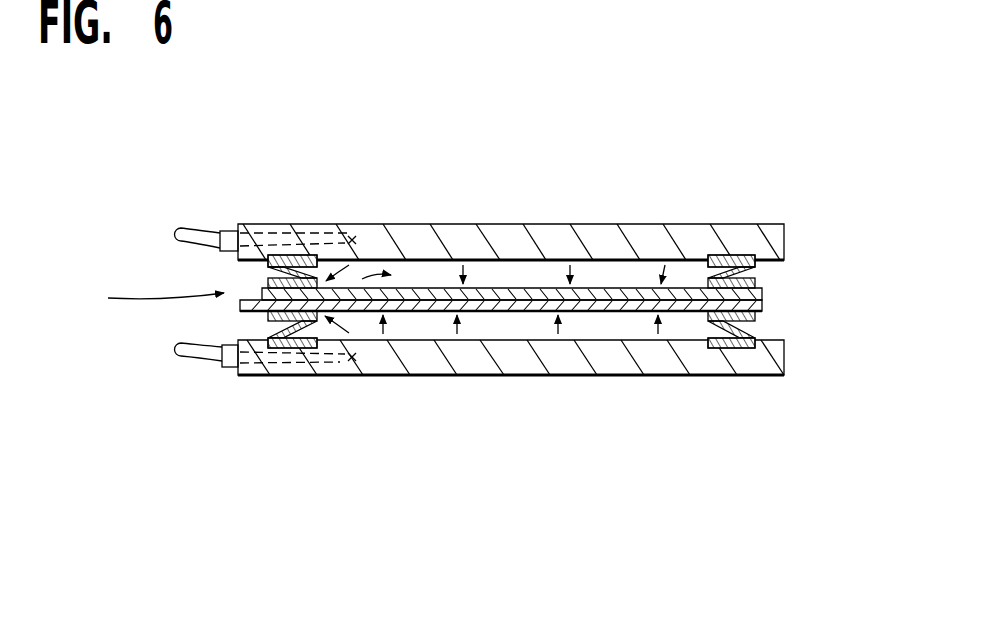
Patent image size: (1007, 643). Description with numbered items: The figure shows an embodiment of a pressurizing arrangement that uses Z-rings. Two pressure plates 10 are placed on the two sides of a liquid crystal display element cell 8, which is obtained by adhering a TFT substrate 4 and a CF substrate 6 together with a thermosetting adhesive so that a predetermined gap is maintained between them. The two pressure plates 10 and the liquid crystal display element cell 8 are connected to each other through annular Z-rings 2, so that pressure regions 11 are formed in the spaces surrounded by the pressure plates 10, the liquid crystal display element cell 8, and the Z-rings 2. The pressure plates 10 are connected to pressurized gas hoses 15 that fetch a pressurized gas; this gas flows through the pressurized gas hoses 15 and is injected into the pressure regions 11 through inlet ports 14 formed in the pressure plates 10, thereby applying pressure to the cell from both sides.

The Z-ring 2 is at (757, 330).
The TFT substrate 4 is at (262, 289).
The CF substrate 6 is at (242, 302).
The liquid crystal display element cell 8 is at (155, 298).
The pressure plate 10 is at (653, 237).
The pressure region 11 is at (508, 325).
The inlet port 14 is at (355, 236).
The pressurized gas hose 15 is at (200, 232).